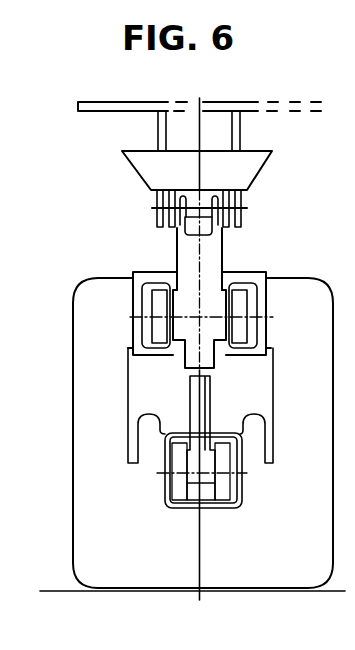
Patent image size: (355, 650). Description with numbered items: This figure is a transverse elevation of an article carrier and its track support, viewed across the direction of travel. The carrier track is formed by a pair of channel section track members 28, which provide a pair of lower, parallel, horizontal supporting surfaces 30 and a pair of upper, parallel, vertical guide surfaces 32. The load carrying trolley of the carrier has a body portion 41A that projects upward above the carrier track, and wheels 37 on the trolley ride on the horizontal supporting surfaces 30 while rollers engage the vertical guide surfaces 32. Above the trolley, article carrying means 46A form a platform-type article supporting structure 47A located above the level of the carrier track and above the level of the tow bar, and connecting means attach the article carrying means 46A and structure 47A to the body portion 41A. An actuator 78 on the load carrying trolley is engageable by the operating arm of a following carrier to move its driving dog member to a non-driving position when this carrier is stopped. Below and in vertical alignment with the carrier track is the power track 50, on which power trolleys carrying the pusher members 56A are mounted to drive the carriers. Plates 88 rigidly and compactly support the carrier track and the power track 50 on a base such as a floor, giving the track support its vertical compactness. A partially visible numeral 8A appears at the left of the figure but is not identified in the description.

The article supporting structure 47A is at (212, 97).
The article carrying means 46A is at (150, 136).
The actuator 78 is at (134, 168).
The drive assembly 8A is at (123, 209).
The body portion 41A is at (224, 243).
The vertical guide surfaces 32 is at (180, 262).
The channel section track members 28 is at (132, 271).
The horizontal supporting surfaces 30 is at (256, 336).
The wheels 37 is at (250, 300).
The plates 88 is at (305, 561).
The power track 50 is at (251, 489).
The pusher members 56A is at (190, 403).